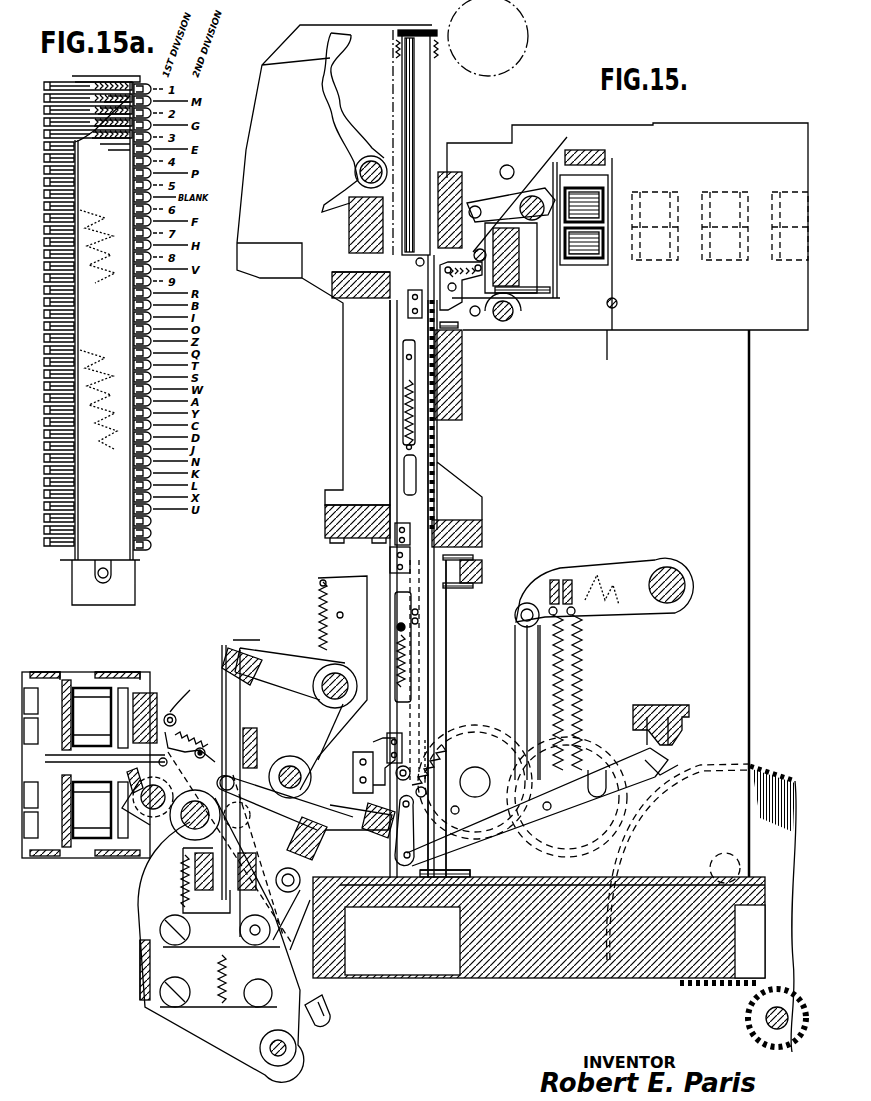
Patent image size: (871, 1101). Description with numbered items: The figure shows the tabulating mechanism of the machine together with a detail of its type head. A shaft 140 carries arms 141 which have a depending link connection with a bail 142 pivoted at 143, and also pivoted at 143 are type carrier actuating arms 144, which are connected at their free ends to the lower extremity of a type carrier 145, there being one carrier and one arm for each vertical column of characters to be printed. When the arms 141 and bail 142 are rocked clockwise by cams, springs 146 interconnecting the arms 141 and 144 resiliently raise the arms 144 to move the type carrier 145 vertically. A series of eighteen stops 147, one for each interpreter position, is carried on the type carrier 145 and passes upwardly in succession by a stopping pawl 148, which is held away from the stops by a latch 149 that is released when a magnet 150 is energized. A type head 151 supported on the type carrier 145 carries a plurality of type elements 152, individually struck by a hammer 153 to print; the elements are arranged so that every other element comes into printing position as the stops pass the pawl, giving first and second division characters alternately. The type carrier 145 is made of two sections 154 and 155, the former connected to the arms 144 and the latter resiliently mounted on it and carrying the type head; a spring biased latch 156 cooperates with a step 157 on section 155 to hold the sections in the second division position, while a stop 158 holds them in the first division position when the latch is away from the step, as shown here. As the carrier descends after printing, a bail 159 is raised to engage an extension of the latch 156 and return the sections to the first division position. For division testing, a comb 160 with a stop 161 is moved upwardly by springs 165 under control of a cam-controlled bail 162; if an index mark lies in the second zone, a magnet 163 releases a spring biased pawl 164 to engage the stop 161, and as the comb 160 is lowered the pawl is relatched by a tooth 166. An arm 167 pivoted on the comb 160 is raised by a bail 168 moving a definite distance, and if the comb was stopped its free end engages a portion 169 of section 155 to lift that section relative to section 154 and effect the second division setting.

In FIG. 15, the shaft 140 is at (670, 585).
In FIG. 15, the arms 141 is at (600, 575).
In FIG. 15, the bail 142 is at (492, 790).
In FIG. 15, the pivot 143 is at (672, 768).
In FIG. 15, the type carrier actuating arms 144 is at (478, 845).
In FIG. 15, the type carrier 145 is at (436, 640).
In FIG. 15, the springs 146 is at (594, 700).
In FIG. 15, the stops 147 is at (440, 465).
In FIG. 15, the stopping pawl 148 is at (470, 322).
In FIG. 15, the latch 149 is at (512, 322).
In FIG. 15, the magnet 150 is at (586, 240).
In FIG. 15A, the type head 151 is at (100, 340).
In FIG. 15, the type head 151 is at (430, 115).
In FIG. 15A, the type elements 152 is at (46, 440).
In FIG. 15, the type elements 152 is at (397, 52).
In FIG. 15, the hammer 153 is at (310, 75).
In FIG. 15, the section 154 is at (448, 665).
In FIG. 15, the section 155 is at (425, 742).
In FIG. 15, the spring biased latch 156 is at (438, 752).
In FIG. 15, the step 157 is at (378, 748).
In FIG. 15, the stop 158 is at (418, 612).
In FIG. 15, the bail 159 is at (392, 832).
In FIG. 15, the comb 160 is at (234, 708).
In FIG. 15, the stop 161 is at (258, 740).
In FIG. 15, the cam-controlled bail 162 is at (262, 648).
In FIG. 15, the magnet 163 is at (93, 765).
In FIG. 15, the spring biased pawl 164 is at (250, 770).
In FIG. 15, the springs 165 is at (150, 900).
In FIG. 15, the tooth 166 is at (190, 728).
In FIG. 15, the arm 167 is at (345, 825).
In FIG. 15, the bail 168 is at (300, 880).
In FIG. 15, the portion 169 is at (368, 752).